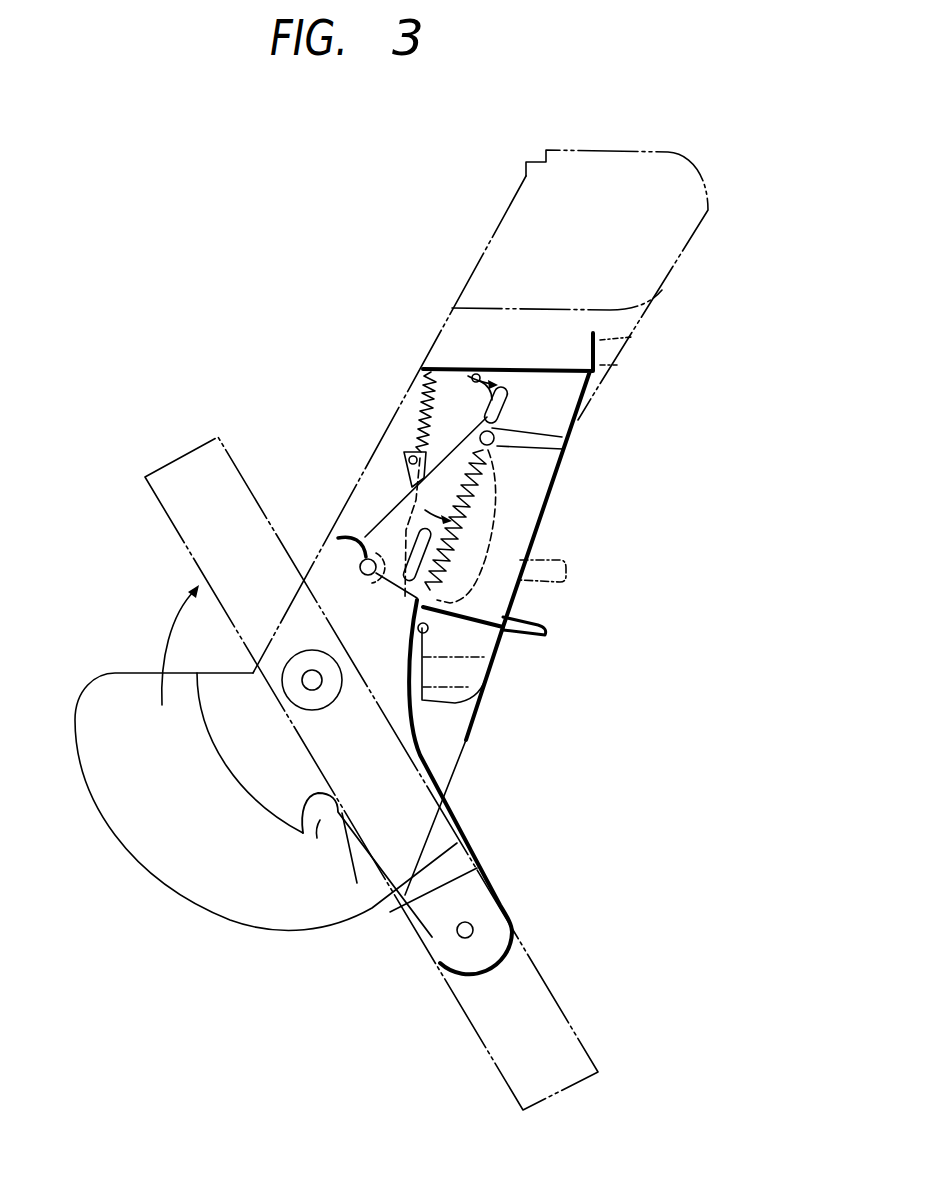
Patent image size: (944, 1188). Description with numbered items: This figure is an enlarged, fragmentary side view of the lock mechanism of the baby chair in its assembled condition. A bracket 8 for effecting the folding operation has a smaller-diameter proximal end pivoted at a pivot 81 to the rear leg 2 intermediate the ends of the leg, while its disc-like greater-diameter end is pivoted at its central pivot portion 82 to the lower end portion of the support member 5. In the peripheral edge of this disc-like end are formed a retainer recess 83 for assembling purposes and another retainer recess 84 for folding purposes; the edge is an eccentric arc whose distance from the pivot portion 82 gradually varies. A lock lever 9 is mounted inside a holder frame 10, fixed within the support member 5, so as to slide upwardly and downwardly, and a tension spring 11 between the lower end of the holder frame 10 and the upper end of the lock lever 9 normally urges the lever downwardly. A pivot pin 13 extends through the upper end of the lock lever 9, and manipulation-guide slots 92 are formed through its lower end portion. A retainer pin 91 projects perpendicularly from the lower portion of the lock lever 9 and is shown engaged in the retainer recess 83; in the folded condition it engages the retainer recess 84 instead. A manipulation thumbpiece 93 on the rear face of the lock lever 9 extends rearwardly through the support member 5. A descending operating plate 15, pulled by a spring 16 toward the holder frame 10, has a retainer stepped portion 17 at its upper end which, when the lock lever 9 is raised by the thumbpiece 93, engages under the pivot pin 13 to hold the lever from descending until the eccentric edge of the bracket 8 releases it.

The rear leg 2 is at (197, 487).
The support member 5 is at (590, 163).
The bracket 8 is at (262, 770).
The lock lever 9 is at (507, 540).
The holder frame 10 is at (557, 403).
The tension spring 11 is at (463, 518).
The pivot pin 13 is at (495, 443).
The descending operating plate 15 is at (452, 392).
The spring 16 is at (423, 403).
The retainer stepped portion 17 is at (468, 368).
The pivot 81 is at (473, 929).
The pivot portion 82 is at (305, 694).
The retainer recess 83 is at (364, 537).
The retainer recess 84 is at (318, 836).
The retainer pin 91 is at (362, 578).
The manipulation-guide slots 92 is at (413, 601).
The manipulation thumbpiece 93 is at (546, 634).